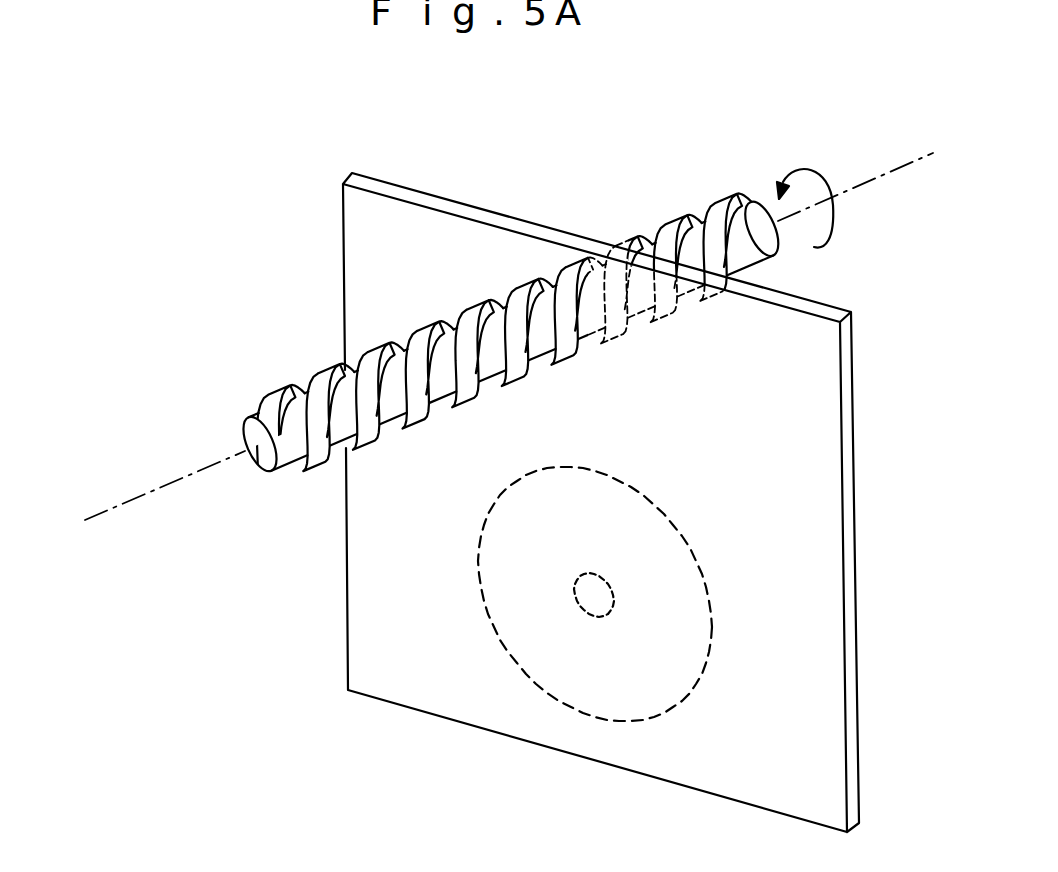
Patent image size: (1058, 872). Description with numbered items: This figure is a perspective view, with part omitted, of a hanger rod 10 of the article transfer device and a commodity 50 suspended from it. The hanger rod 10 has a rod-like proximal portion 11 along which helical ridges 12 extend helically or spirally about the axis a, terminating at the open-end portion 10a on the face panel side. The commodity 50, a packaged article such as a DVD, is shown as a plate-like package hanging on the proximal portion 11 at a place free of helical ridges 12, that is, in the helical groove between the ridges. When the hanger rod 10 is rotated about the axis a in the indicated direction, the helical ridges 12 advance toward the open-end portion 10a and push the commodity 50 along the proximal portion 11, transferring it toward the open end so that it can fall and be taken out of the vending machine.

The hanger rod 10 is at (415, 341).
The rod-like proximal portion 11 is at (265, 400).
The helical ridges 12 is at (283, 398).
The open-end portion 10a is at (210, 441).
The packaged commodity 50 is at (801, 503).
The axis a is at (868, 181).